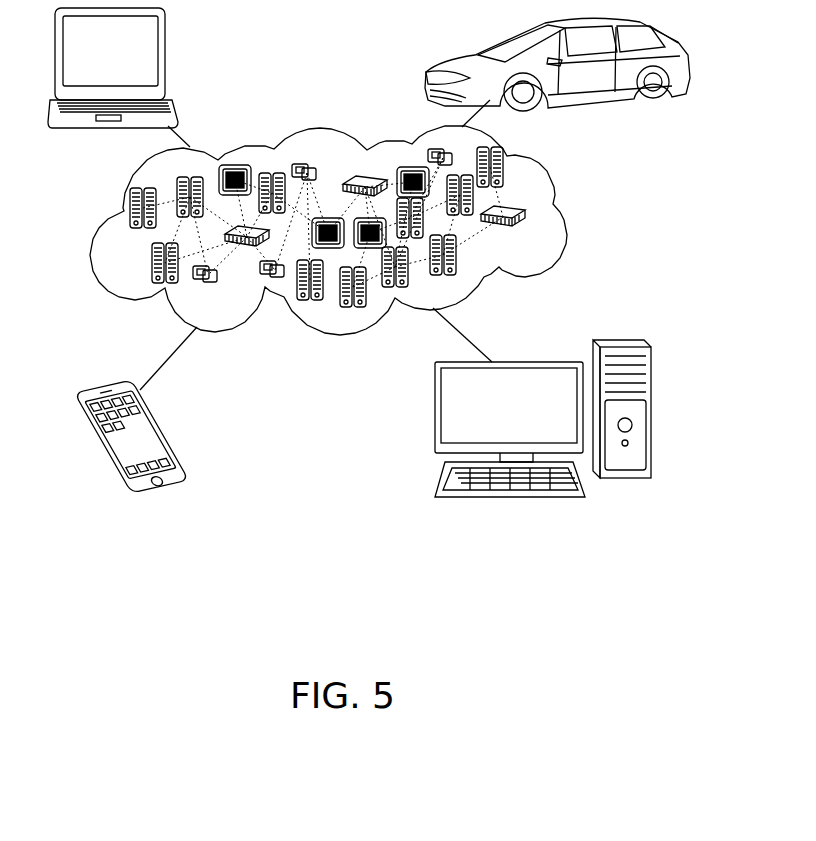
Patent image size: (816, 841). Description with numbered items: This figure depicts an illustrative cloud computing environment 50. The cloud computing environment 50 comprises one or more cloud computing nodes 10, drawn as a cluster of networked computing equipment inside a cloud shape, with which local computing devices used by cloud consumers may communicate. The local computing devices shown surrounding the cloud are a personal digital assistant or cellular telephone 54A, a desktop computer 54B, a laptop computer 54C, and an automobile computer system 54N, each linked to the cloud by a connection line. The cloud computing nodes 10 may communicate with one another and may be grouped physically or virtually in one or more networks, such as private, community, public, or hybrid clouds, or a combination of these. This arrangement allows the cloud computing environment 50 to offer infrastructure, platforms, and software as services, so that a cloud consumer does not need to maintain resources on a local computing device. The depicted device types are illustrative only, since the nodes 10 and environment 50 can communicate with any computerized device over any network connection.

The cloud computing environment 50 is at (563, 218).
The cloud computing nodes 10 is at (528, 228).
The personal digital assistant (PDA) or cellular telephone 54A is at (148, 428).
The desktop computer 54B is at (548, 362).
The laptop computer 54C is at (153, 66).
The automobile computer system 54N is at (427, 70).